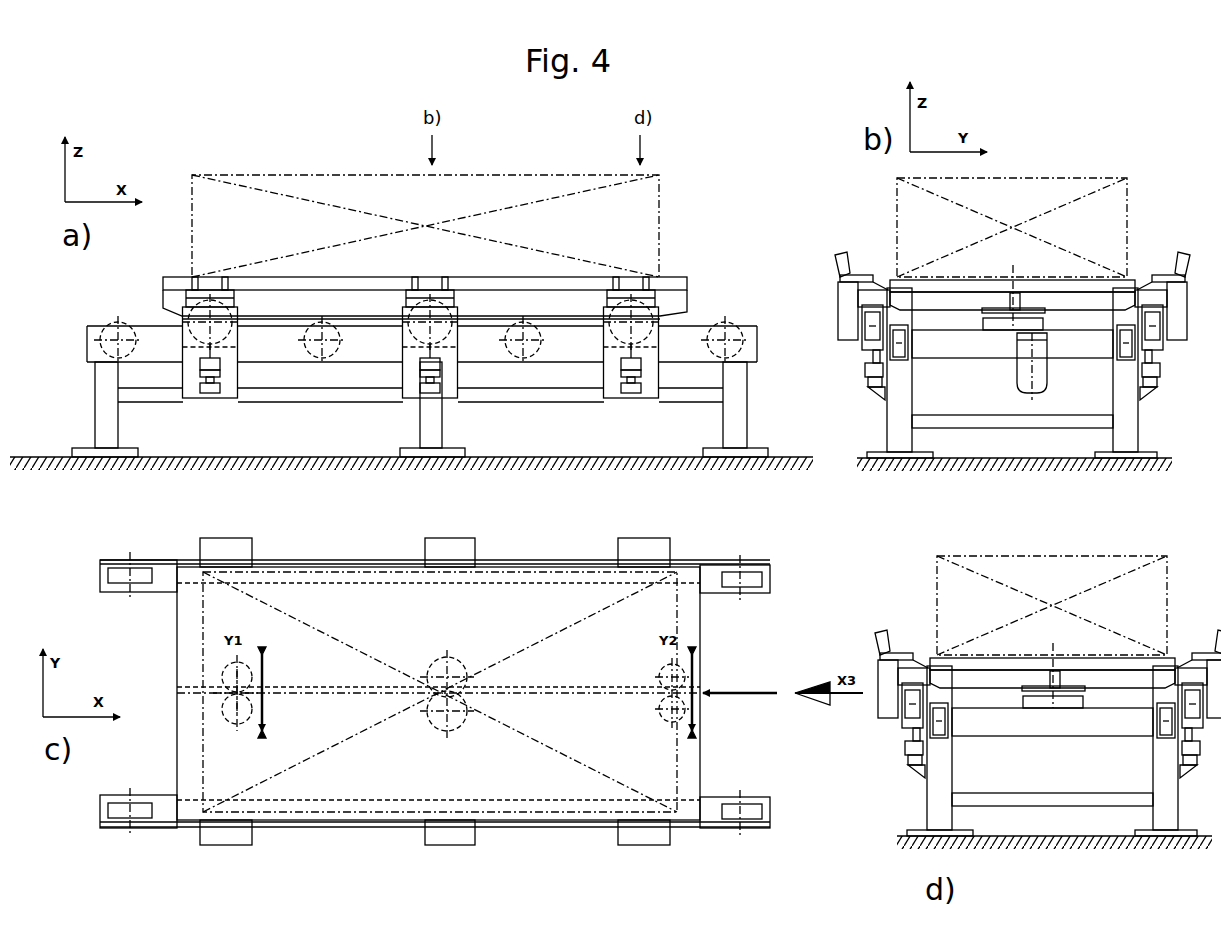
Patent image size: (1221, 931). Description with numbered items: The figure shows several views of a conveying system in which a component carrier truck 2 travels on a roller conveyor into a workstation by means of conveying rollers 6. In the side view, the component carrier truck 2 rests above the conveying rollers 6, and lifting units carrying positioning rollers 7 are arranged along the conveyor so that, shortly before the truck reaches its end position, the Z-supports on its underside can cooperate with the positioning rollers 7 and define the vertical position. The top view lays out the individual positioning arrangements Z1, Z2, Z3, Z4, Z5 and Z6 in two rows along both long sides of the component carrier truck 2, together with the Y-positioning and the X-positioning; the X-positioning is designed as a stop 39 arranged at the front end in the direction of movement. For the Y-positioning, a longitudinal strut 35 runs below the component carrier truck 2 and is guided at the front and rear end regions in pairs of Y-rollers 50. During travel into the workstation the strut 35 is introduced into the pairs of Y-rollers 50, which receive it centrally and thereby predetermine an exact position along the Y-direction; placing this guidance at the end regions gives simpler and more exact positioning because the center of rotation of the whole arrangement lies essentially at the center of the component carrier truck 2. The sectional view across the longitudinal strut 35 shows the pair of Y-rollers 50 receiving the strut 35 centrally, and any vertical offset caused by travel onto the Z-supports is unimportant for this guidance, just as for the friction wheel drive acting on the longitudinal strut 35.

In FIG. 4a, the component carrier truck 2 is at (668, 277).
In FIG. 4a, the conveying rollers 6 is at (737, 322).
In FIG. 4a, the positioning rollers 7 is at (660, 317).
In FIG. 4c, the strut 35 is at (572, 697).
In FIG. 4d, the strut 35 is at (1047, 677).
In FIG. 4c, the pairs of Y-rollers 50 is at (662, 667).
In FIG. 4d, the pairs of Y-rollers 50 is at (1082, 690).
In FIG. 4c, the stop 39 is at (740, 698).
In FIG. 4c, the positioning arrangement Z1 is at (233, 553).
In FIG. 4c, the positioning arrangement Z2 is at (238, 832).
In FIG. 4c, the positioning arrangement Z3 is at (455, 555).
In FIG. 4c, the positioning arrangement Z4 is at (452, 837).
In FIG. 4c, the positioning arrangement Z5 is at (650, 557).
In FIG. 4c, the positioning arrangement Z6 is at (658, 837).